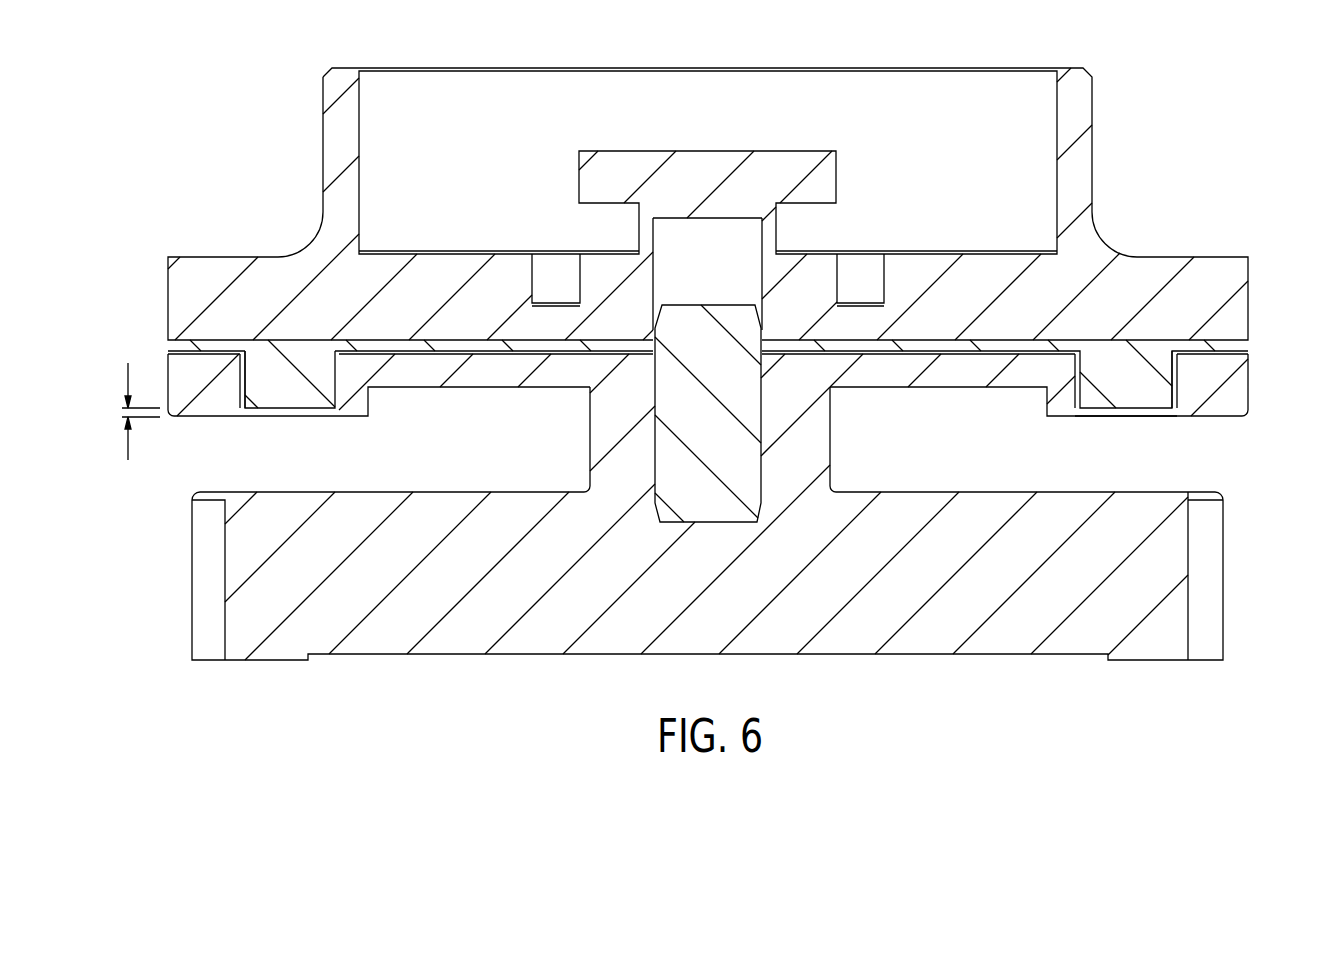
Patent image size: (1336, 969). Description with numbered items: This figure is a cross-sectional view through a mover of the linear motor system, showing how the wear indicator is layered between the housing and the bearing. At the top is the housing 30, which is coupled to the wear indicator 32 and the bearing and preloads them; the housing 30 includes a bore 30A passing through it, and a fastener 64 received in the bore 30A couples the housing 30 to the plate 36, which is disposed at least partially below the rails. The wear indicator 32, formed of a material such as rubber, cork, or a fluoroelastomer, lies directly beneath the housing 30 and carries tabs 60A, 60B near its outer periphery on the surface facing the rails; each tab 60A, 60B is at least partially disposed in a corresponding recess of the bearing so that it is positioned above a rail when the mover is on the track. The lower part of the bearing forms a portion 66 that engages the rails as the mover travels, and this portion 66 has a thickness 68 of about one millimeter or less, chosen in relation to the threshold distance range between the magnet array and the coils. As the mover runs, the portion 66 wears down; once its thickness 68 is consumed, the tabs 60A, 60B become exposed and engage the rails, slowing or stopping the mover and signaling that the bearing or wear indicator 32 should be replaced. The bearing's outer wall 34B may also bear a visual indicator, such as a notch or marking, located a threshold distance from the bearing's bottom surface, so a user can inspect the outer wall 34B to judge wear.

The housing 30 is at (1248, 300).
The bore 30A is at (762, 262).
The wear indicator 32 is at (1248, 348).
The outer wall 34B is at (1248, 380).
The plate 36 is at (1223, 580).
The tab 60A is at (1175, 380).
The tab 60B is at (242, 382).
The fastener 64 is at (761, 493).
The portion of the bearing 66 is at (288, 415).
The thickness 68 is at (128, 384).